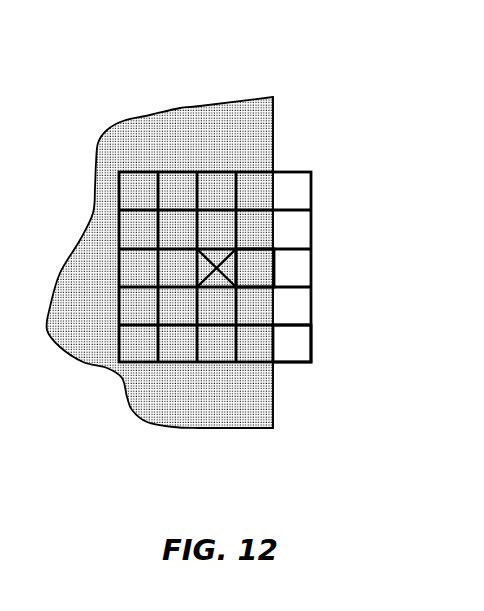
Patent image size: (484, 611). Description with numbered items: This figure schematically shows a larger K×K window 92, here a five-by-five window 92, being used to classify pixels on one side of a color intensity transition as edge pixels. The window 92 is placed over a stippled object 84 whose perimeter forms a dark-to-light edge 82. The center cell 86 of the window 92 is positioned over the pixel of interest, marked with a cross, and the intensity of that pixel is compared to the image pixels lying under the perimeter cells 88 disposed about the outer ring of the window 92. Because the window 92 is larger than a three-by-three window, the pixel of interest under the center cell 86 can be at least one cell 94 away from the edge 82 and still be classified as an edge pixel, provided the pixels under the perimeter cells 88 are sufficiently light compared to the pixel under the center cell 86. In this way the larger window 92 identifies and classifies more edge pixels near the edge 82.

The dark to light transition 82 is at (275, 117).
The object 84 is at (230, 100).
The center cell 86 is at (218, 270).
The perimeter cell 88 is at (287, 335).
The K×K window 92 is at (312, 192).
The cell 94 is at (250, 275).